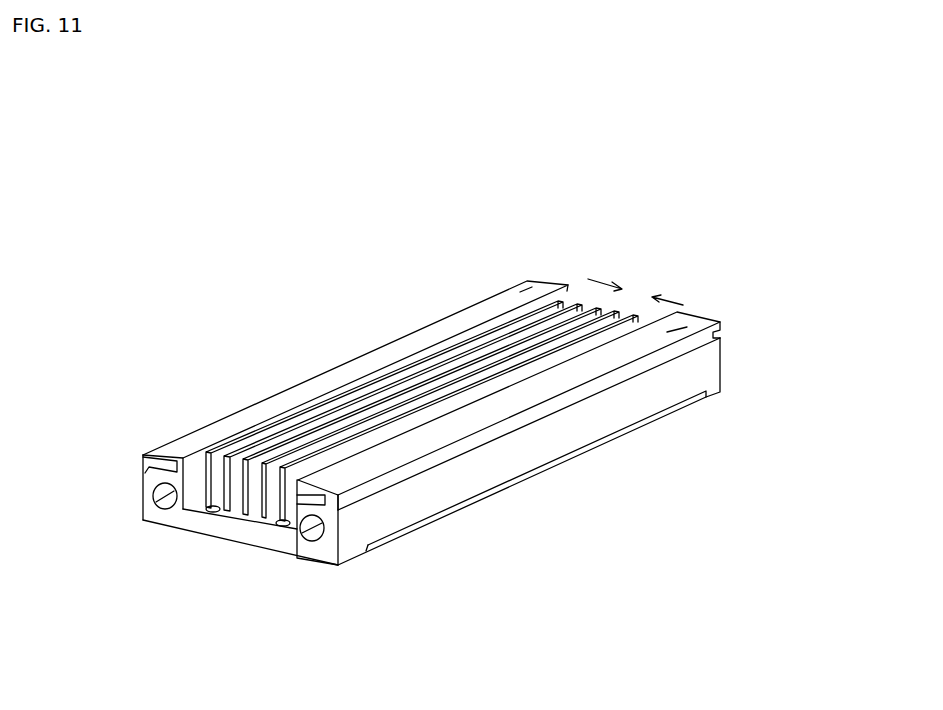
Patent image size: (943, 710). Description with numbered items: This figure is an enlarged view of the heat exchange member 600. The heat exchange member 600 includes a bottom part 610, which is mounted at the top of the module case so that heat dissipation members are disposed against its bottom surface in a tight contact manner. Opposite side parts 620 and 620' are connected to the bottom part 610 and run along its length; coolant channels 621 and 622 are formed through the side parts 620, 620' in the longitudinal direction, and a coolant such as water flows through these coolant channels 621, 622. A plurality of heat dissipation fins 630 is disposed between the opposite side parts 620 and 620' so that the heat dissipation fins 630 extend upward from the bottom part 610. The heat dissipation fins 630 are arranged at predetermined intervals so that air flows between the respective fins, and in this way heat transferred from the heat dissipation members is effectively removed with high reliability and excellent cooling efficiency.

The heat exchange member 600 is at (104, 111).
The bottom part 610 is at (487, 493).
The side part 620 is at (342, 398).
The side part 620' is at (499, 437).
The coolant channel 621 is at (168, 495).
The coolant channel 622 is at (307, 540).
The heat dissipation fins 630 is at (430, 357).